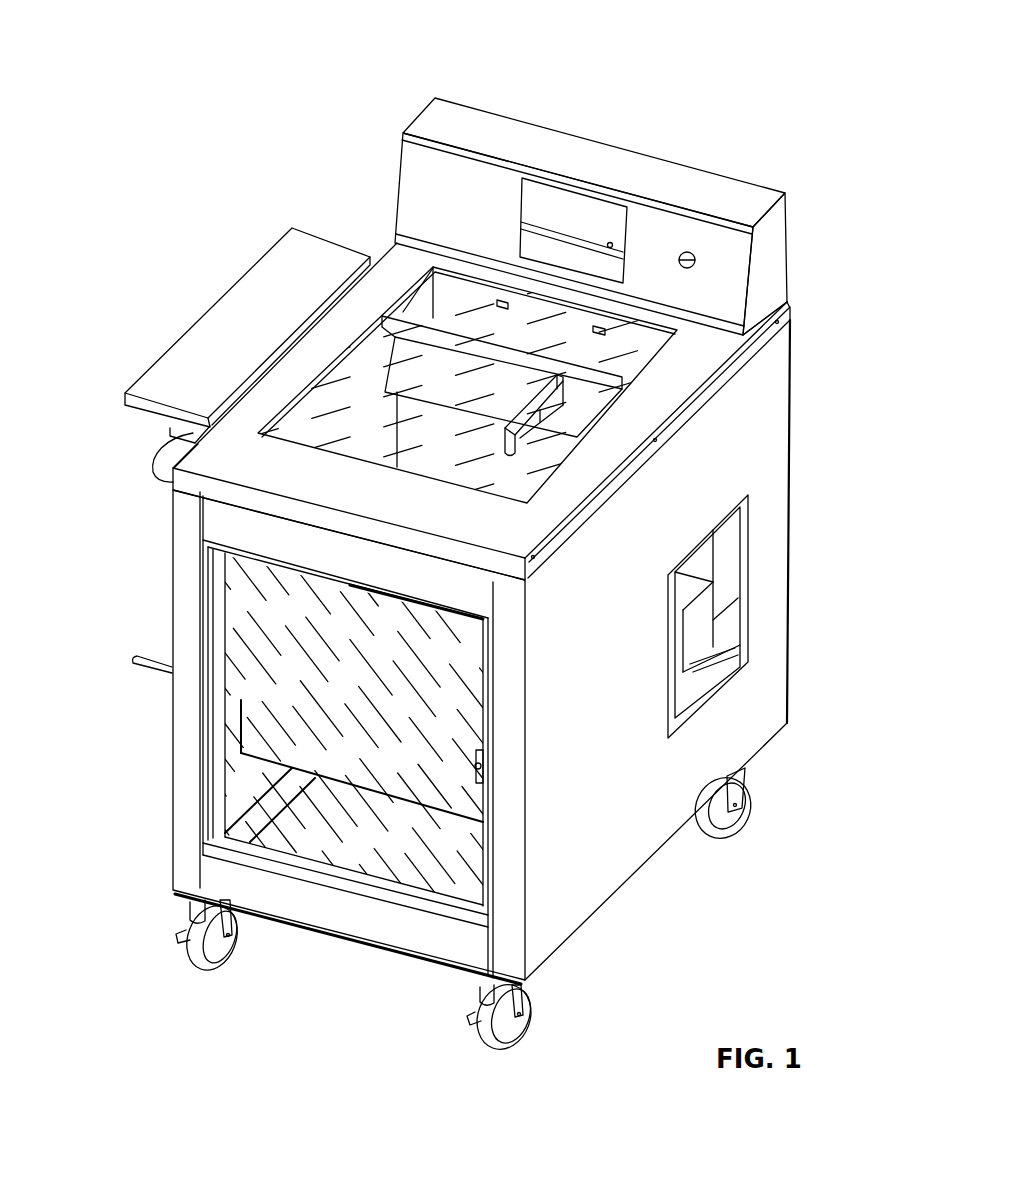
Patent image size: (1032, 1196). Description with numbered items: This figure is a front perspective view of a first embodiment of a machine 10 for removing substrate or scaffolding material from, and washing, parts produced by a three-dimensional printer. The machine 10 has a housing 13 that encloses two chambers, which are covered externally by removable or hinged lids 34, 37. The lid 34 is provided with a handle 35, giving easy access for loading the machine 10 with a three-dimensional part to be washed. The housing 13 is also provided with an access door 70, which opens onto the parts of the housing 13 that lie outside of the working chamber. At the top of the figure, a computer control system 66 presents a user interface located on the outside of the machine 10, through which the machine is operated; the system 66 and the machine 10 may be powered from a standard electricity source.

The machine 10 is at (324, 88).
The housing 13 is at (750, 400).
The lid 34 is at (487, 463).
The handle 35 is at (530, 407).
The lid 37 is at (455, 299).
The computer control system 66 is at (558, 205).
The access door 70 is at (275, 717).